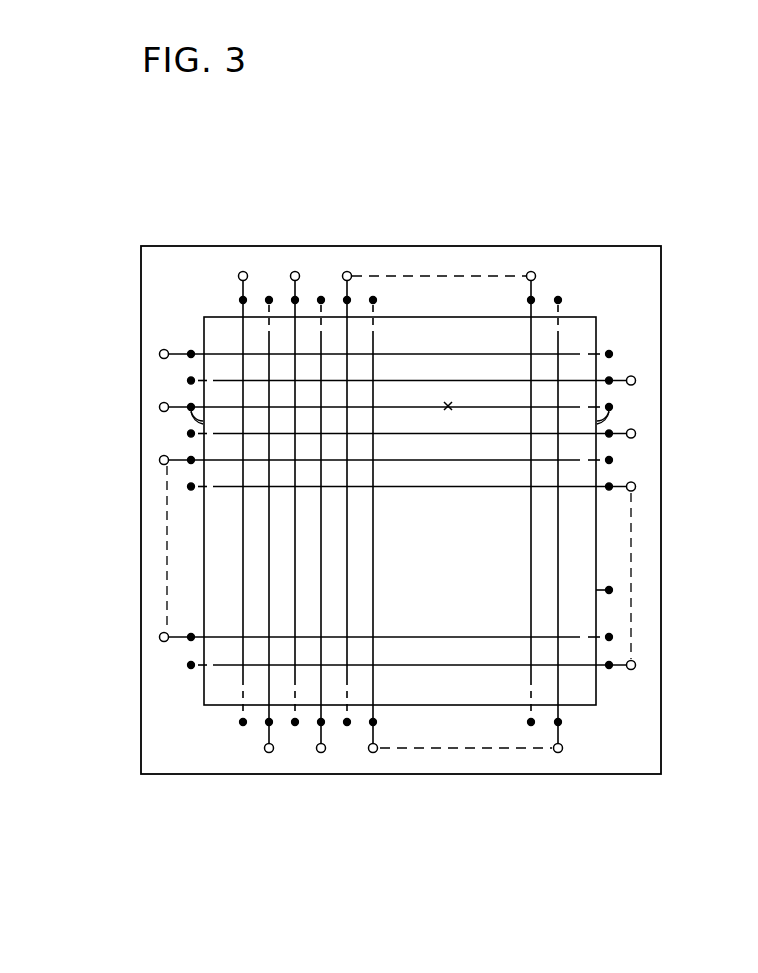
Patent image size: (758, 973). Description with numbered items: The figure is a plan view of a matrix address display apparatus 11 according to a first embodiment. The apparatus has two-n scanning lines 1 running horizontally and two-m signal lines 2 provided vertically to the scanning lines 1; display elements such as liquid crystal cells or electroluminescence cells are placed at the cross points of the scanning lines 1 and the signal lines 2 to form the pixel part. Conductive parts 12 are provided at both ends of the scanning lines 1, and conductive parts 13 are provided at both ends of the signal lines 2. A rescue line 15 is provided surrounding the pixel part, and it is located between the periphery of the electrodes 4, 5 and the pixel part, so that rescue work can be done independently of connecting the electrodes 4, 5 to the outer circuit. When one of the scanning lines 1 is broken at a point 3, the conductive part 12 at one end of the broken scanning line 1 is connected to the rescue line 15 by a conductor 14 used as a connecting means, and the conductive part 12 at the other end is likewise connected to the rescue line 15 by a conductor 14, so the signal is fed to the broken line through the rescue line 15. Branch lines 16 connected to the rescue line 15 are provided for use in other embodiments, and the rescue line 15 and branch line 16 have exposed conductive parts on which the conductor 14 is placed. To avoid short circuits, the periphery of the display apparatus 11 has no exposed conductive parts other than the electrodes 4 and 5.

The scanning lines 1 is at (434, 380).
The signal lines 2 is at (294, 535).
The point 3 is at (447, 416).
The electrodes 4 is at (158, 354).
The electrodes 5 is at (243, 271).
The display apparatus 11 is at (203, 757).
The conductive parts 12 is at (190, 354).
The conductive parts 13 is at (269, 297).
The conductor 14 is at (194, 416).
The rescue line 15 is at (597, 539).
The branch lines 16 is at (610, 588).